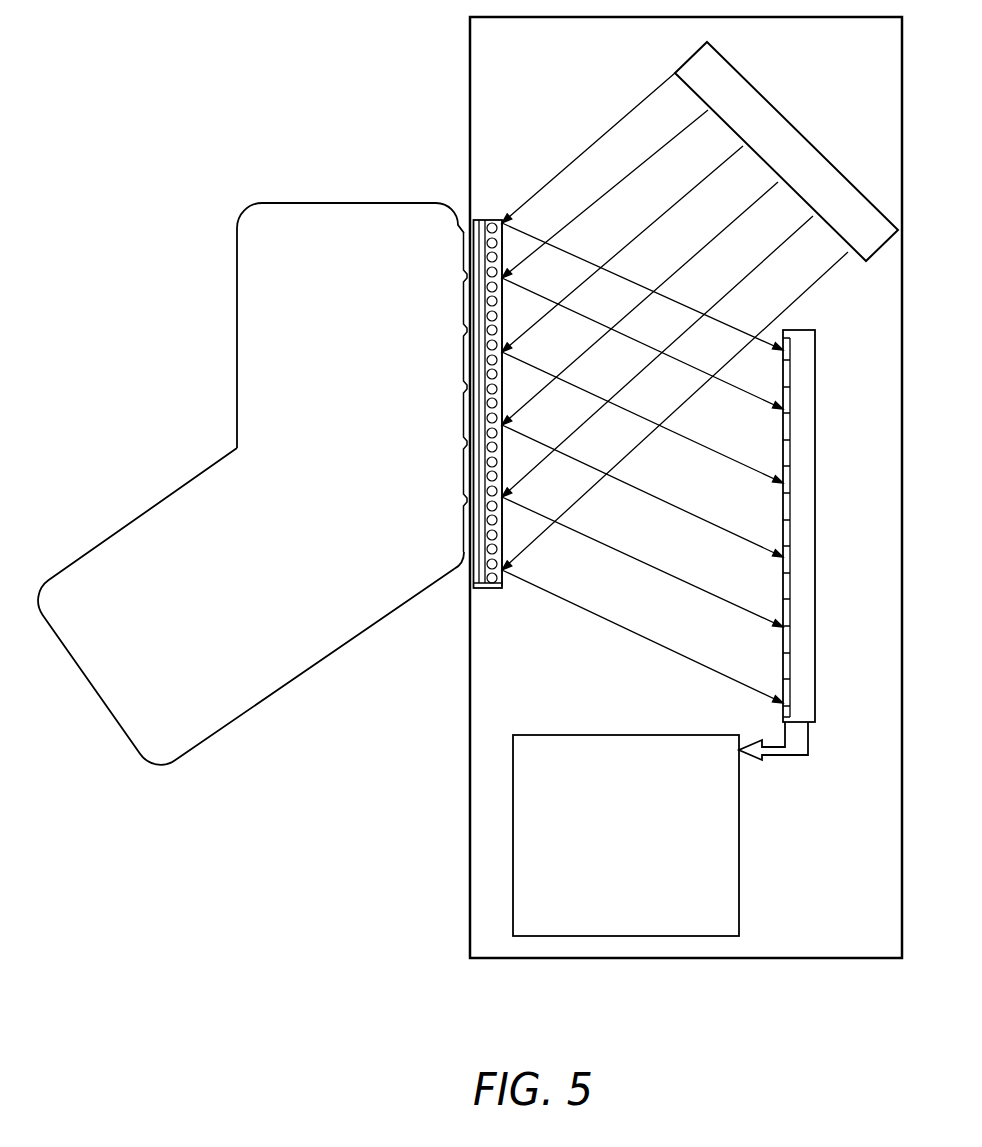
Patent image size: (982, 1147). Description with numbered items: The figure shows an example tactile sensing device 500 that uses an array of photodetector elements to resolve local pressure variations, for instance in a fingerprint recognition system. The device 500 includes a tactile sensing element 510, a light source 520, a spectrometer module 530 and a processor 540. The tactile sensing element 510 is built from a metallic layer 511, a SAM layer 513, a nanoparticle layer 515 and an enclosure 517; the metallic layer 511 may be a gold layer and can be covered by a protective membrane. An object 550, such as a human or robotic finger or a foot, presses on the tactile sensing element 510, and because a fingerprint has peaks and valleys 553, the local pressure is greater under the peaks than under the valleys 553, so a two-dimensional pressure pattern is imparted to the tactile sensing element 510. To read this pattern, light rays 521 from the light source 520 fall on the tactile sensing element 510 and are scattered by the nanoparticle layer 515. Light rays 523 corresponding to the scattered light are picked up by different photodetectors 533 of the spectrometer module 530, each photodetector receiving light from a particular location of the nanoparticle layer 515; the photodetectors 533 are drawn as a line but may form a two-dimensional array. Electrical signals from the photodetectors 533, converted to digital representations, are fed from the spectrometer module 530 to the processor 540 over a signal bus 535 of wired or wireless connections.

The tactile sensing device 500 is at (432, 42).
The tactile sensing element 510 is at (501, 440).
The metallic layer 511 is at (477, 590).
The SAM layer 513 is at (484, 590).
The nanoparticle layer 515 is at (493, 590).
The enclosure 517 is at (500, 528).
The light source 520 is at (778, 123).
The light rays 521 is at (625, 177).
The light rays 523 is at (725, 458).
The spectrometer module 530 is at (836, 526).
The array of photodetectors 533 is at (790, 405).
The signal bus 535 is at (808, 742).
The processor 540 is at (732, 852).
The object 550 is at (252, 454).
The valleys 553 is at (466, 393).